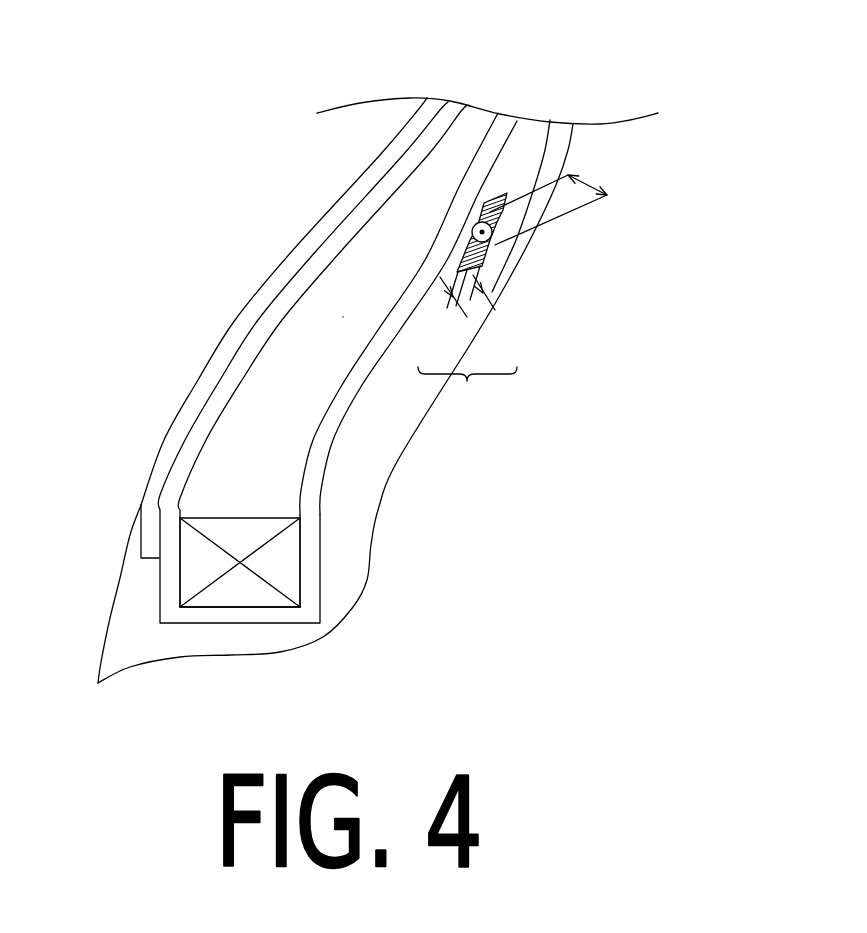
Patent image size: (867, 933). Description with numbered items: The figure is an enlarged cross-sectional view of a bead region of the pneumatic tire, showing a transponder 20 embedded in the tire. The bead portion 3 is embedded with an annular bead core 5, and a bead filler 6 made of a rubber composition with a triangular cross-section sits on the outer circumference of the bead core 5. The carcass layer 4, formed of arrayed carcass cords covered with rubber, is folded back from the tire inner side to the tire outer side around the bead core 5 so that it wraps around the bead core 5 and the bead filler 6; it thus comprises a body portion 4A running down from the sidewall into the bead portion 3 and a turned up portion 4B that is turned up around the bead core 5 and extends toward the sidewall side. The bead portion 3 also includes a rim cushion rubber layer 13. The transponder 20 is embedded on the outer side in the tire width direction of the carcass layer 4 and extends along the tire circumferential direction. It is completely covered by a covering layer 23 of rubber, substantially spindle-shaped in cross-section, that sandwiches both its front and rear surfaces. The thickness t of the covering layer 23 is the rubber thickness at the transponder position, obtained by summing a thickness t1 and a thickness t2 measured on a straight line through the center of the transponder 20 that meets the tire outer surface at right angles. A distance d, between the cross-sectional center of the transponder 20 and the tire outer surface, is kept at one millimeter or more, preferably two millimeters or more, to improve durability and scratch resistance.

The bead portion 3 is at (378, 390).
The rim cushion rubber layer 13 is at (358, 455).
The carcass layer 4 is at (323, 362).
The body portion 4A is at (200, 430).
The turned up portion 4B is at (312, 530).
The bead core 5 is at (197, 563).
The bead filler 6 is at (343, 317).
The transponder 20 is at (480, 213).
The covering layer 23 is at (492, 200).
The distance d is at (548, 195).
The thickness of the covering layer t is at (467, 398).
The thickness t1 is at (455, 300).
The thickness t2 is at (487, 293).